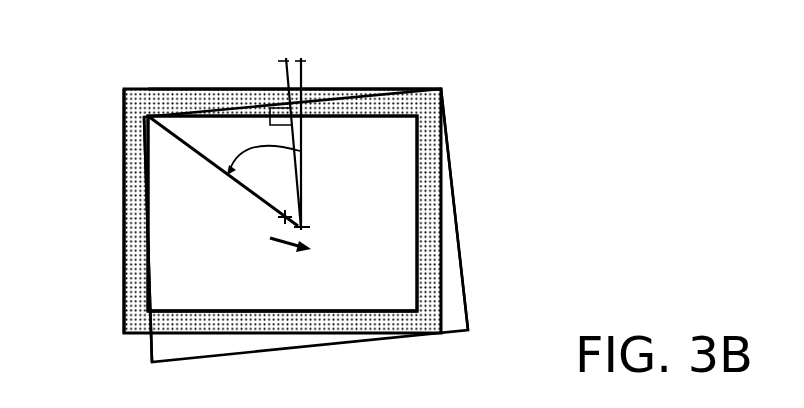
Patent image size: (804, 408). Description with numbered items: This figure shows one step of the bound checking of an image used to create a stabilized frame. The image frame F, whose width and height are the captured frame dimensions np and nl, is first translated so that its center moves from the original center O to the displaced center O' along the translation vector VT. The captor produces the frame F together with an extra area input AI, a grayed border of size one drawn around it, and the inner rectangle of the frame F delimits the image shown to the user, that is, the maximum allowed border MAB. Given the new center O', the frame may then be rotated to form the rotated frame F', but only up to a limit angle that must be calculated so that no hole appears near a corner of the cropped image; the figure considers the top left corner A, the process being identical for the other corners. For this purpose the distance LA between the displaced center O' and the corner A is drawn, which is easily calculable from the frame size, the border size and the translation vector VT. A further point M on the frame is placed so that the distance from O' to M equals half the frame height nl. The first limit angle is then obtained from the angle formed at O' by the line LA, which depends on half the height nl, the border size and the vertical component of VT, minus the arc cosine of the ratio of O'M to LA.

The top left corner of the cropped image A is at (144, 117).
The extra area input AI is at (125, 145).
The point M on the frame border M is at (282, 198).
The captured frame width np is at (418, 86).
The captured frame height nl is at (121, 283).
The image frame F is at (249, 213).
The rotated frame F' is at (481, 209).
The maximum allowed border MAB is at (383, 316).
The distance between displaced center and corner A LA is at (242, 185).
The center of the frame O is at (268, 229).
The displaced center O' is at (322, 210).
The translation vector VT is at (278, 248).